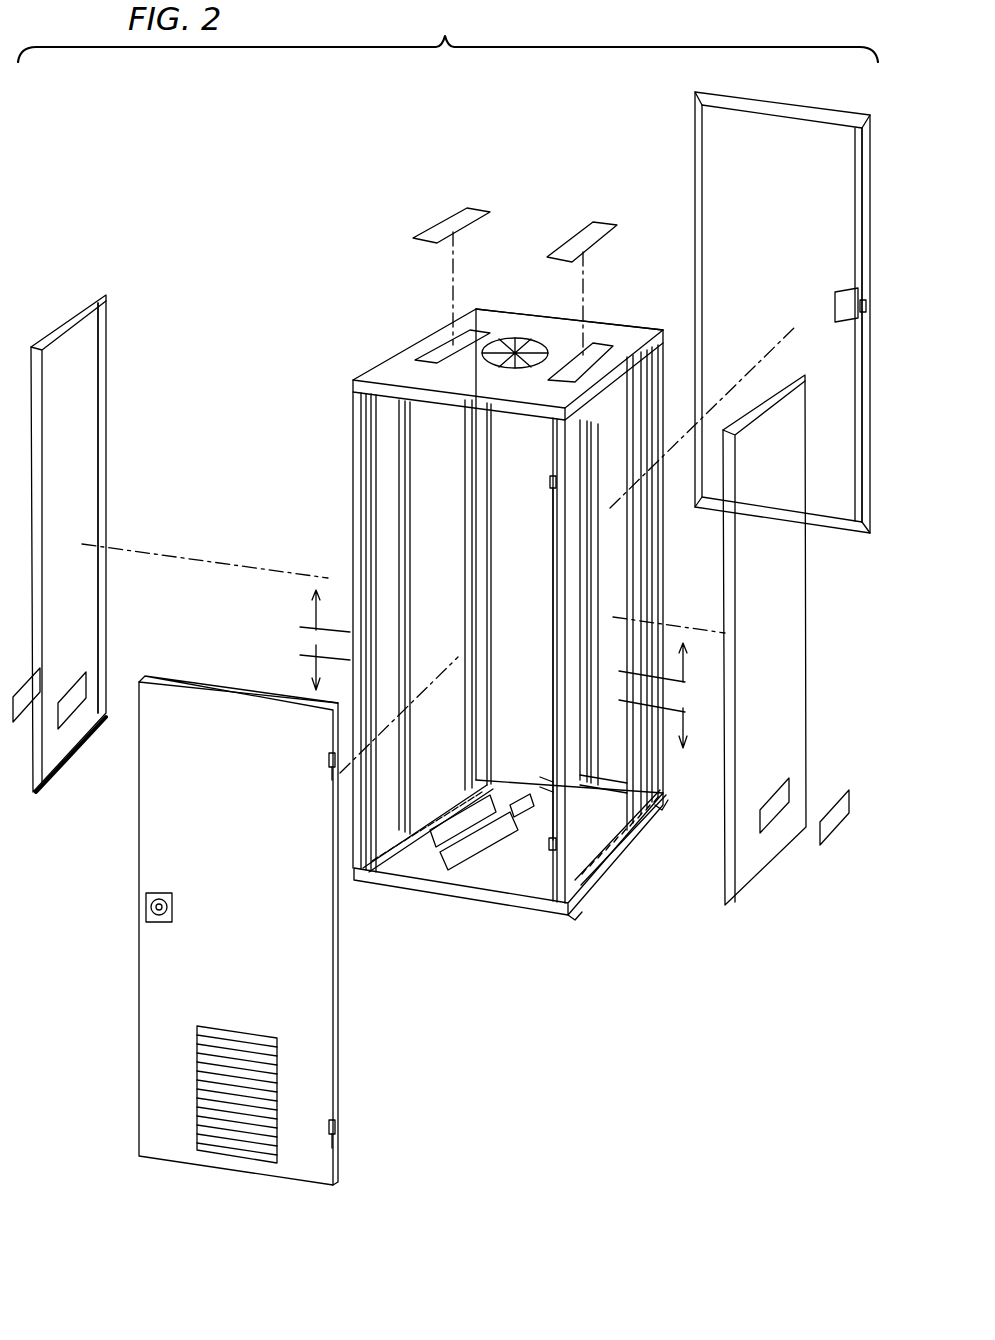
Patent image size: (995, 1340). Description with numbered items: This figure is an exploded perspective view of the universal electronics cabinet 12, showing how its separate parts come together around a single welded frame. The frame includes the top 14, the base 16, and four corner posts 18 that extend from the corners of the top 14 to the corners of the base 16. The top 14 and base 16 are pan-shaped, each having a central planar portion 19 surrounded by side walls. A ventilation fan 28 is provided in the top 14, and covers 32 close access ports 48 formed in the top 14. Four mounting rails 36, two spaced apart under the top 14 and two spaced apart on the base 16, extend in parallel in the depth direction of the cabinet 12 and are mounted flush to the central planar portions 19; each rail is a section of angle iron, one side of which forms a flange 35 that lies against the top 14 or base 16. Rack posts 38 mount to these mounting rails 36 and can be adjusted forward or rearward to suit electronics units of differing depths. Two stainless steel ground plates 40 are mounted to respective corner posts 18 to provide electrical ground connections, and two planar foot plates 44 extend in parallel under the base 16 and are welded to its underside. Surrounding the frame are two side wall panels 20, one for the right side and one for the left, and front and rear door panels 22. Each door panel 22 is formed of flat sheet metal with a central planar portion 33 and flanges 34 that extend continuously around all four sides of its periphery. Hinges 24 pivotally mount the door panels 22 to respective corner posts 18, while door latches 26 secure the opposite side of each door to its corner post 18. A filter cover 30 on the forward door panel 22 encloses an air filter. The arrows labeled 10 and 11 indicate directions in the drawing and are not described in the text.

The downward direction 10 is at (495, 696).
The upward direction 11 is at (495, 636).
The universal electronics cabinet 12 is at (476, 158).
The top 14 is at (377, 372).
The base 16 is at (520, 906).
The corner posts 18 is at (352, 436).
The central planar portion 19 is at (487, 310).
The side wall panels 20 is at (82, 438).
The door panels 22 is at (330, 1000).
The hinges 24 is at (547, 484).
The door latches 26 is at (143, 918).
The ventilation fan 28 is at (518, 350).
The filter cover 30 is at (214, 1152).
The covers 32 is at (460, 214).
The central planar portion 33 is at (78, 505).
The flanges 34 is at (80, 318).
The flange 35 is at (860, 143).
The mounting rails 36 is at (455, 800).
The rack posts 38 is at (638, 590).
The ground plates 40 is at (664, 358).
The foot plates 44 is at (580, 906).
The access ports 48 is at (437, 340).